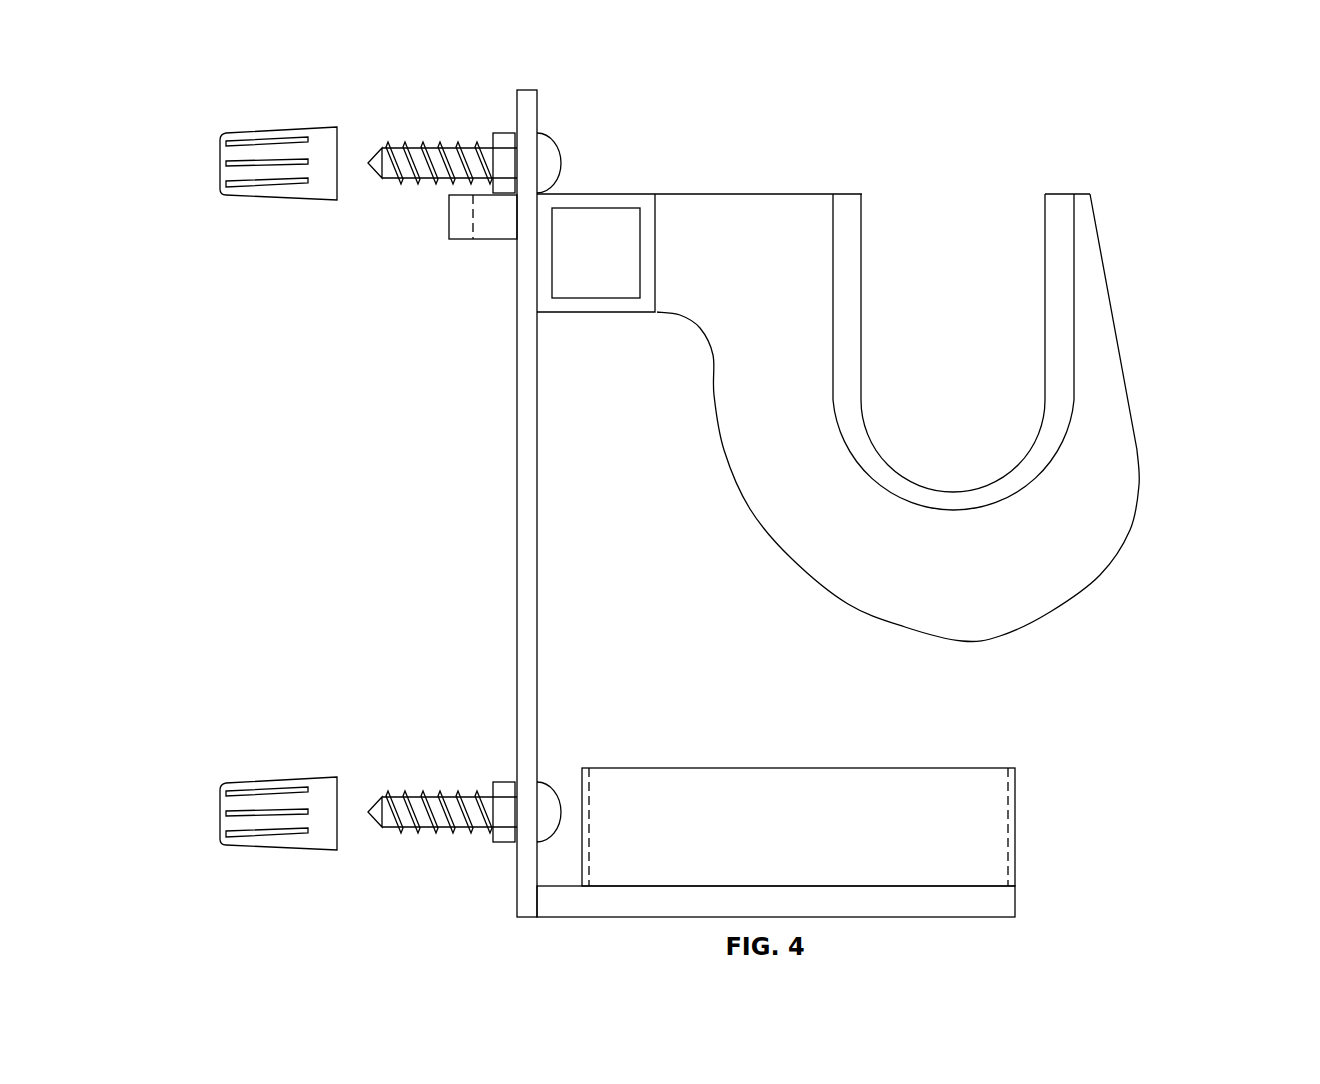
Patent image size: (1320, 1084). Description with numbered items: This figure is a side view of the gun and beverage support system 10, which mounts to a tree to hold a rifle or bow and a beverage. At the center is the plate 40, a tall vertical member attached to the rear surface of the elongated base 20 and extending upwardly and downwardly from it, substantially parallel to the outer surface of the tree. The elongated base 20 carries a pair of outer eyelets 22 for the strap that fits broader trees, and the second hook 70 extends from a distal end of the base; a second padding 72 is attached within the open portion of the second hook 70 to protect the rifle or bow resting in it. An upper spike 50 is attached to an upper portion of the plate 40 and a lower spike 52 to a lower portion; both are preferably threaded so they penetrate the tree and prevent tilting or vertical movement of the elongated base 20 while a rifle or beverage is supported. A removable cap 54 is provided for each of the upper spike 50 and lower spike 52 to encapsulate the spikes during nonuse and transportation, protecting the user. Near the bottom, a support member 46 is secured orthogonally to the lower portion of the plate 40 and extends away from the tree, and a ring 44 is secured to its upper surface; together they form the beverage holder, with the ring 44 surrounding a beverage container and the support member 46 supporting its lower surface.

The gun and beverage support system 10 is at (855, 503).
The elongated base 20 is at (593, 203).
The outer eyelets 22 is at (508, 226).
The plate 40 is at (521, 578).
The ring 44 is at (989, 793).
The support member 46 is at (997, 900).
The upper spike 50 is at (418, 177).
The lower spike 52 is at (440, 796).
The cap 54 is at (277, 193).
The second hook 70 is at (926, 379).
The second padding 72 is at (844, 214).